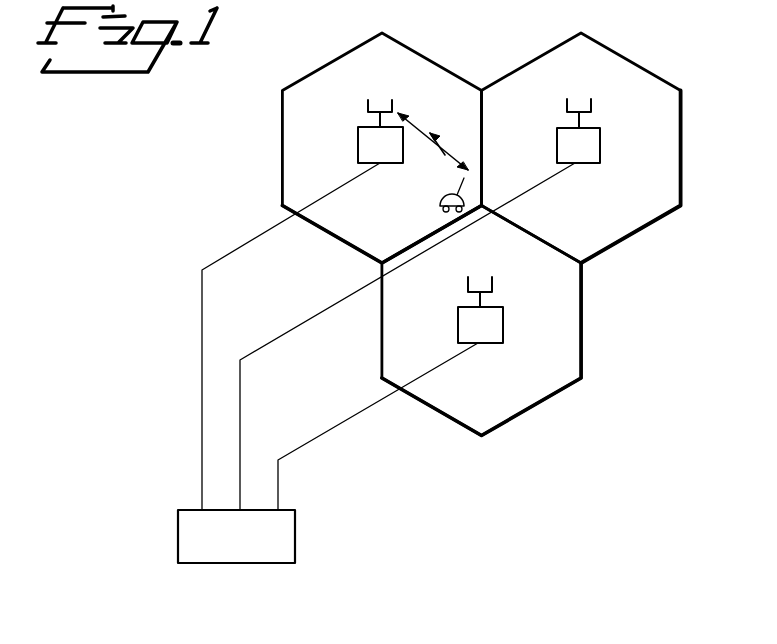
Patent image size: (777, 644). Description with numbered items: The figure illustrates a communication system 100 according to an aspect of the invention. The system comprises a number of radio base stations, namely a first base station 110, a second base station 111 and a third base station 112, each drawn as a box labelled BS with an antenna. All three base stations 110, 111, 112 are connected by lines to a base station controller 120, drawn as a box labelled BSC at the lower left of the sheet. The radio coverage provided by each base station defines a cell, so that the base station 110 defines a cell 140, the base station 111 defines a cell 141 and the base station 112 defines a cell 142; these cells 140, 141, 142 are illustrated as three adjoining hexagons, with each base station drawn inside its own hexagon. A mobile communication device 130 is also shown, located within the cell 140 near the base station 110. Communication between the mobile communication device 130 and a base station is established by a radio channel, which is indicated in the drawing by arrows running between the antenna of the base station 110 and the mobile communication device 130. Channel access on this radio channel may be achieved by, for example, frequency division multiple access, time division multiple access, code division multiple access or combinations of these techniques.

The communication system 100 is at (226, 162).
The radio base station 110 is at (358, 137).
The radio base station 111 is at (557, 137).
The radio base station 112 is at (458, 317).
The base station controller 120 is at (295, 525).
The mobile communication device 130 is at (437, 198).
The cell 140 is at (440, 66).
The cell 141 is at (637, 65).
The cell 142 is at (582, 332).